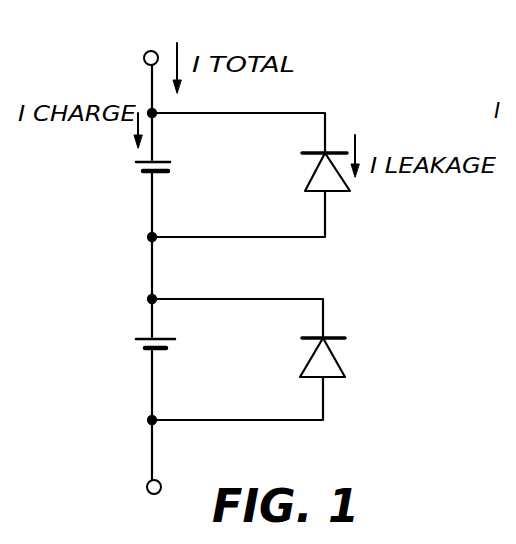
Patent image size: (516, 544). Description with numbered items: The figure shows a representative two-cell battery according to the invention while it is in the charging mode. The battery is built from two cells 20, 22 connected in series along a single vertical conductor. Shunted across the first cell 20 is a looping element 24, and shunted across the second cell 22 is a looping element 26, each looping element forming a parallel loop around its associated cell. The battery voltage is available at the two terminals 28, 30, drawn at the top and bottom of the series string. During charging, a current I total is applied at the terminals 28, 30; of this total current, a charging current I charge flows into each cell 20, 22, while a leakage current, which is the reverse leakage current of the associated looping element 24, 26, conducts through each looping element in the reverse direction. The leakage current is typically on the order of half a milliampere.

The terminal 28 is at (146, 52).
The cell 20 is at (142, 163).
The cell 22 is at (144, 343).
The looping element 24 is at (348, 192).
The looping element 26 is at (334, 361).
The terminal 30 is at (146, 487).